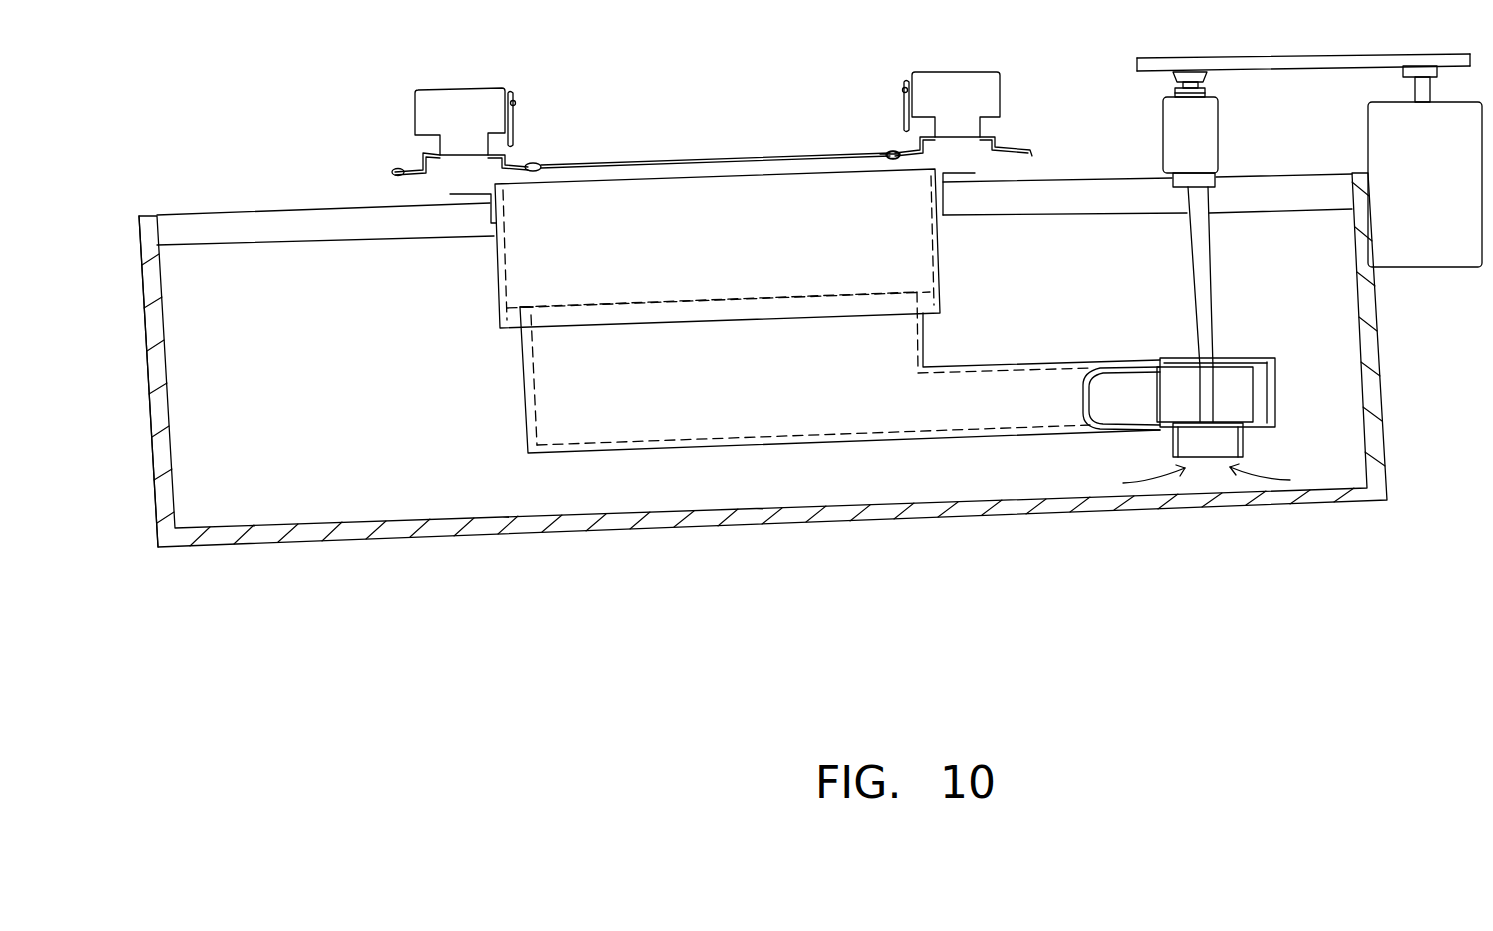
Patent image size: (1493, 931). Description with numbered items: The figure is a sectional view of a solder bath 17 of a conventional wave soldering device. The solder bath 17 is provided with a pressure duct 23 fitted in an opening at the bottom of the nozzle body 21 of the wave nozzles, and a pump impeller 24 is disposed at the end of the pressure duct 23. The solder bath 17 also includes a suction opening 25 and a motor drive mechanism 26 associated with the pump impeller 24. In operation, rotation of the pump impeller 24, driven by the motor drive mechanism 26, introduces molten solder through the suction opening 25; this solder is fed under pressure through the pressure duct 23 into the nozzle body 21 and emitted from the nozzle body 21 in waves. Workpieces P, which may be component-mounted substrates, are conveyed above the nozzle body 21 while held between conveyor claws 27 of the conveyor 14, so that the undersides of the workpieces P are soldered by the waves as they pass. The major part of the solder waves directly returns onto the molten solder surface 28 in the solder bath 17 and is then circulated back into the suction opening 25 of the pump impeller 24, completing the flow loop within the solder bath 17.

The conveyor 14 is at (948, 85).
The solder bath 17 is at (988, 505).
The nozzle body 21 is at (942, 252).
The pressure duct 23 is at (973, 367).
The pump impeller 24 is at (1237, 387).
The suction opening 25 is at (1232, 436).
The motor drive mechanism 26 is at (1283, 56).
The conveyor claws 27 is at (898, 155).
The molten solder surface 28 is at (1067, 213).
The workpieces P is at (727, 158).